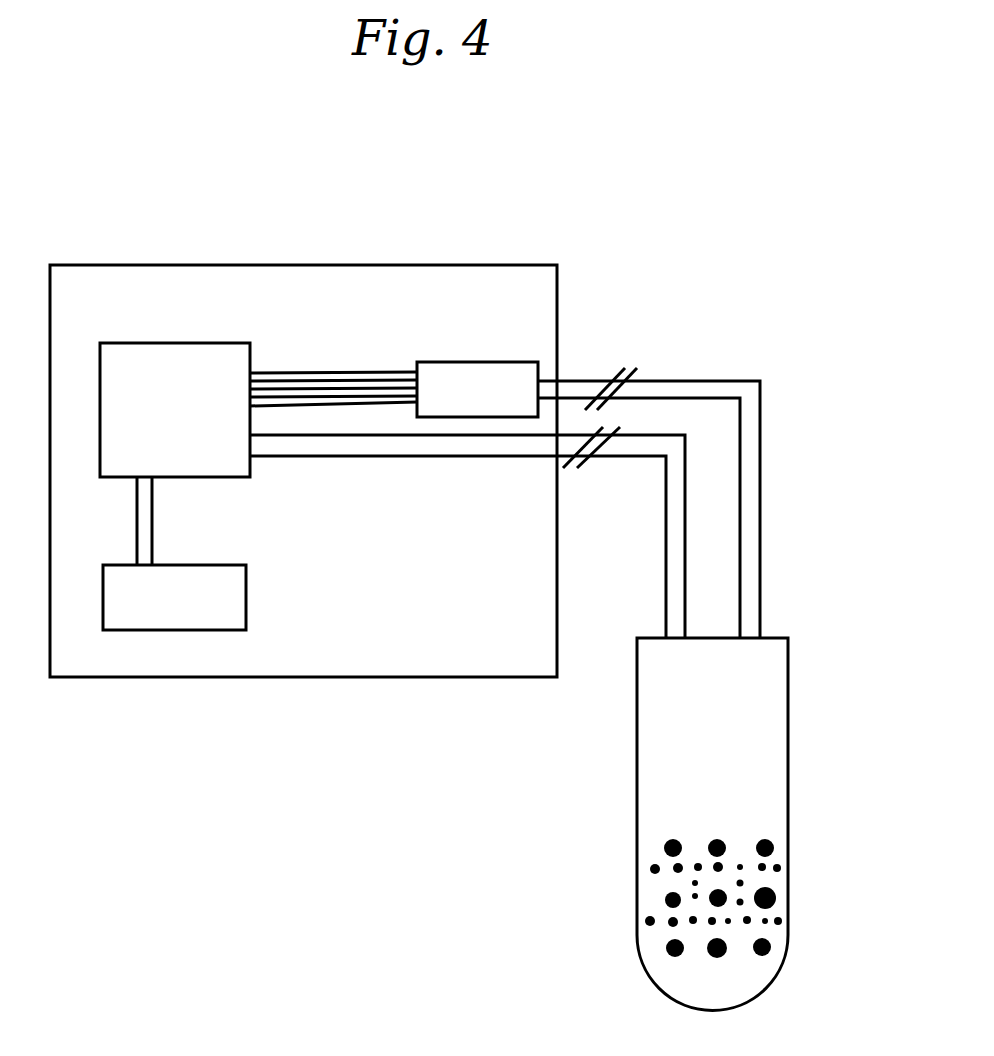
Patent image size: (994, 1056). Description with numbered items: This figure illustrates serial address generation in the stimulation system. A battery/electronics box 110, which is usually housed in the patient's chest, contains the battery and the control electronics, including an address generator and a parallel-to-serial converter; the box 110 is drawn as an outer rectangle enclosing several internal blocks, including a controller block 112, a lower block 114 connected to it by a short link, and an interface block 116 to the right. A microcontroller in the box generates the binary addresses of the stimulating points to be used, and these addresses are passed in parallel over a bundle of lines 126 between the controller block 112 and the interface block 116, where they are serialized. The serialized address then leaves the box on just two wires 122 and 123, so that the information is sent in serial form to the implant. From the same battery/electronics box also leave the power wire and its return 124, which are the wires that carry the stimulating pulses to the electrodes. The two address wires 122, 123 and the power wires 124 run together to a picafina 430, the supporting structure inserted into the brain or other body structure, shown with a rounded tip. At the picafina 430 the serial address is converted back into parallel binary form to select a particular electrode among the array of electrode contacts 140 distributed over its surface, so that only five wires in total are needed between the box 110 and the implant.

The battery/electronics box 110 is at (83, 255).
The controller 112 is at (132, 337).
The power supply 114 is at (258, 613).
The signal interface module 116 is at (485, 350).
The serial address wire 122 is at (680, 363).
The serial address wire 123 is at (717, 392).
The power wire and its return 124 is at (308, 460).
The signal wires 126 is at (310, 362).
The electrode array 140 is at (658, 882).
The probe 430 is at (798, 799).